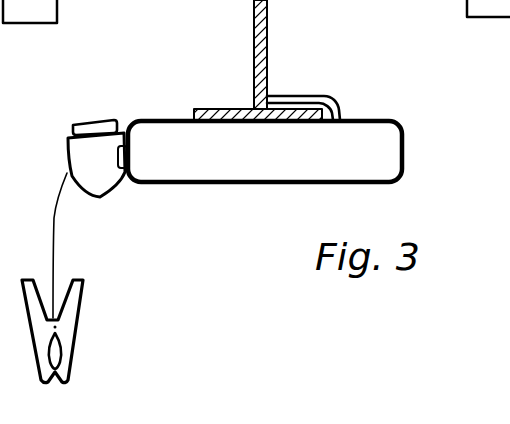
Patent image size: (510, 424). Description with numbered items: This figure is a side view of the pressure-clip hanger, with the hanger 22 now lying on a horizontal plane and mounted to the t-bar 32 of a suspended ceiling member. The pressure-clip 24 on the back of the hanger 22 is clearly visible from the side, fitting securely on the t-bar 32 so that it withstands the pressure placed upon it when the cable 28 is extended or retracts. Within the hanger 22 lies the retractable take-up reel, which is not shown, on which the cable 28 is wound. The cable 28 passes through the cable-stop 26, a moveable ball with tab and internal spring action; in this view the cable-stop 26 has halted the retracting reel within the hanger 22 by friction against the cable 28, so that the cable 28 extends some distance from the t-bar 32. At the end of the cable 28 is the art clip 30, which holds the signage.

The hanger 22 is at (404, 158).
The pressure-clip 24 is at (336, 97).
The cable-stop 26 is at (66, 145).
The cable 28 is at (53, 218).
The art clip 30 is at (80, 335).
The t-bar 32 is at (268, 33).